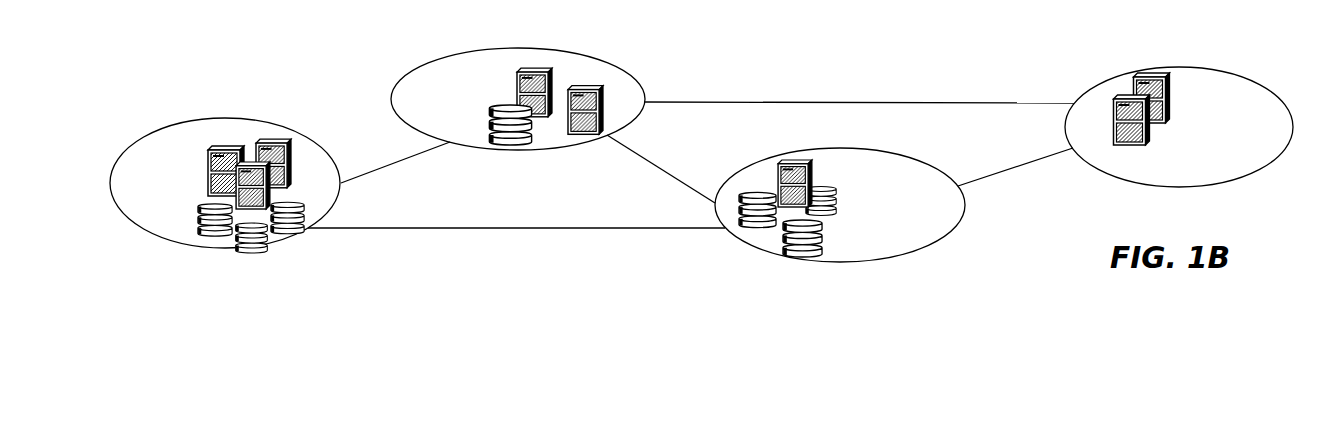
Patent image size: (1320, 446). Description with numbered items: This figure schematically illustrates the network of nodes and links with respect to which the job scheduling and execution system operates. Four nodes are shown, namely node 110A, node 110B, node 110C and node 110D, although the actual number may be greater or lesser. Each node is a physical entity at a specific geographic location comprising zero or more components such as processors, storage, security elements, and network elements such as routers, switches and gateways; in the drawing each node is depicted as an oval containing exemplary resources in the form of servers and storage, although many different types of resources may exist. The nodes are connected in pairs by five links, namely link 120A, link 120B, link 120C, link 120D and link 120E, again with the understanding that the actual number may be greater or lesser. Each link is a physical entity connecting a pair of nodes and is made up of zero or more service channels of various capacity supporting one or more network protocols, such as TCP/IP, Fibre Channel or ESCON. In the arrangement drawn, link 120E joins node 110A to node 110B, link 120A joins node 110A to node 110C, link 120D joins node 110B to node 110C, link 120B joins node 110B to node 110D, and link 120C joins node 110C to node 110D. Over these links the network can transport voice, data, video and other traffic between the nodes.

The node 110A is at (199, 207).
The node 110B is at (480, 129).
The node 110C is at (927, 237).
The node 110D is at (1249, 152).
The link 120A is at (516, 214).
The link 120B is at (859, 88).
The link 120C is at (1015, 188).
The link 120D is at (665, 164).
The link 120E is at (394, 147).